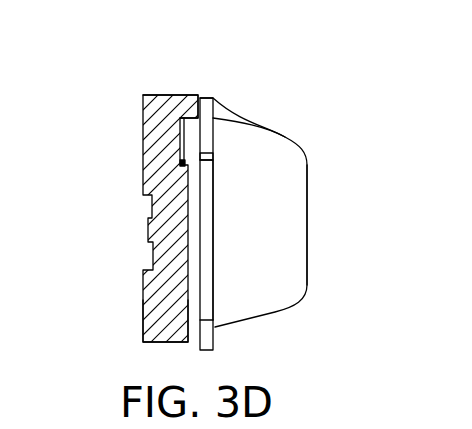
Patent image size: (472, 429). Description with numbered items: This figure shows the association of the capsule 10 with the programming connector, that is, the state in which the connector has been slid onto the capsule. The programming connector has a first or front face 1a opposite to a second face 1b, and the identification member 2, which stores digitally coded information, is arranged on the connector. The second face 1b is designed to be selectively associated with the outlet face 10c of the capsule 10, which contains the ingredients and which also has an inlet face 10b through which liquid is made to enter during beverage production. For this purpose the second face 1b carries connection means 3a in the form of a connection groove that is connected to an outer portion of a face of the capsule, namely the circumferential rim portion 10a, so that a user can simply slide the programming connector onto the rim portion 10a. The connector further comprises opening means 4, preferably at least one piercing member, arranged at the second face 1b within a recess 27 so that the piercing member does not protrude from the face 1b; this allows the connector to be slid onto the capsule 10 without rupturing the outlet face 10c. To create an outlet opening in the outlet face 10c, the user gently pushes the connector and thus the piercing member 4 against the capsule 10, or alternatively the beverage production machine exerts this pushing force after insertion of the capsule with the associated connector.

The first face 1a is at (142, 322).
The second face 1b is at (214, 166).
The identification member 2 is at (142, 235).
The connection means 3a is at (208, 268).
The opening means 4 is at (185, 137).
The recess 27 is at (182, 157).
The capsule 10 is at (272, 305).
The circumferential rim portion 10a is at (214, 98).
The inlet face 10b is at (308, 233).
The outlet face 10c is at (214, 156).